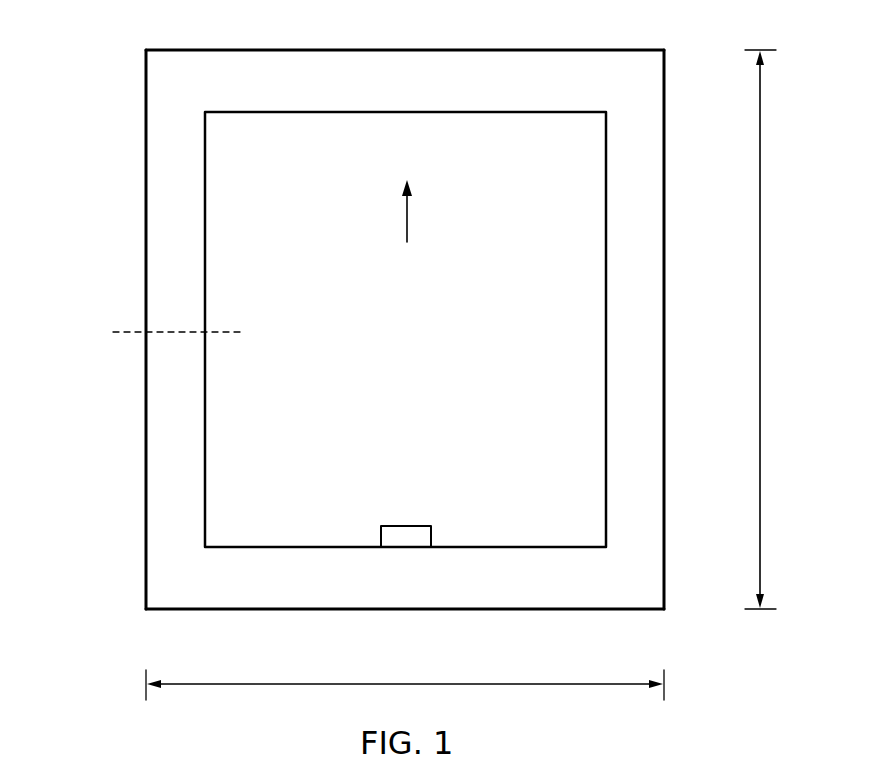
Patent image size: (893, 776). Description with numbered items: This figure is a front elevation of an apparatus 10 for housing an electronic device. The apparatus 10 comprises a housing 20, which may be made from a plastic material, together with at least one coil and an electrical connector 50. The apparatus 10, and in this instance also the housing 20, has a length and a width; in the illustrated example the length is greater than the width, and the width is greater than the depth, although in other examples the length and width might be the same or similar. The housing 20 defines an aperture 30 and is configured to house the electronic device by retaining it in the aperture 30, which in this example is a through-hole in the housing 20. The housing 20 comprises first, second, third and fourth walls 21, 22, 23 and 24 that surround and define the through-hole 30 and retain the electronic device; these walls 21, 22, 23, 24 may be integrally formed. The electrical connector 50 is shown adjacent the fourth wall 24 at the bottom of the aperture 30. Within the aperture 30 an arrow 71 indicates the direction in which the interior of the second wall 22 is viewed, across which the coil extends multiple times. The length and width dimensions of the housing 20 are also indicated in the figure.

The apparatus 10 is at (104, 652).
The housing 20 is at (114, 557).
The first wall 21 is at (170, 211).
The second wall 22 is at (391, 76).
The third wall 23 is at (633, 202).
The fourth wall 24 is at (512, 585).
The aperture 30 is at (445, 353).
The electrical connector 50 is at (441, 521).
The arrow 71 is at (407, 217).